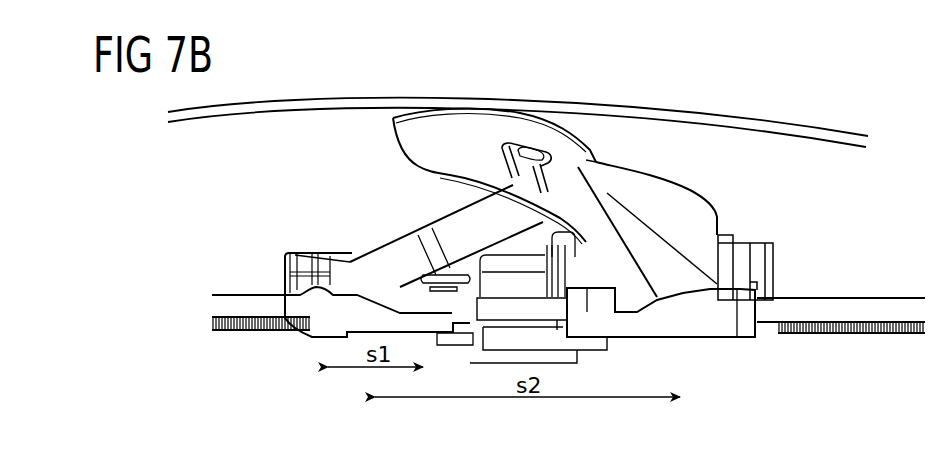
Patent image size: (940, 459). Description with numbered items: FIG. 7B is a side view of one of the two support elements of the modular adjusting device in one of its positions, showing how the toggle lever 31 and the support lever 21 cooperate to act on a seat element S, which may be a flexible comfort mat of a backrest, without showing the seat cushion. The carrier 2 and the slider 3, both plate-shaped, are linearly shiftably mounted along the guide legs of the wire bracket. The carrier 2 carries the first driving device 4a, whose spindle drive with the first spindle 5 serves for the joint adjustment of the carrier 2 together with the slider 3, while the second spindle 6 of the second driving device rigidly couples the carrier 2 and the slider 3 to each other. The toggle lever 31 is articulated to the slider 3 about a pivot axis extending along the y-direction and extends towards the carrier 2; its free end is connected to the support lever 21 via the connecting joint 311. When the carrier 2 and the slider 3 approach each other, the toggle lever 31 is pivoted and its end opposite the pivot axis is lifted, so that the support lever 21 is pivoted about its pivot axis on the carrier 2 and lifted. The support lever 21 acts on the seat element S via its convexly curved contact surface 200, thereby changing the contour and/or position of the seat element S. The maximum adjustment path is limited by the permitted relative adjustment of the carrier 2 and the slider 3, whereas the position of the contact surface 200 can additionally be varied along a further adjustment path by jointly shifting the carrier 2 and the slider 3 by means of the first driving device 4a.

The contact surface 200 is at (465, 110).
The connecting joint 311 is at (530, 148).
The seat element S is at (612, 98).
The support lever 21 is at (637, 233).
The toggle lever 31 is at (482, 228).
The first driving device 4a is at (752, 250).
The second spindle 6 is at (255, 330).
The slider 3 is at (332, 313).
The carrier 2 is at (708, 313).
The first spindle 5 is at (838, 335).